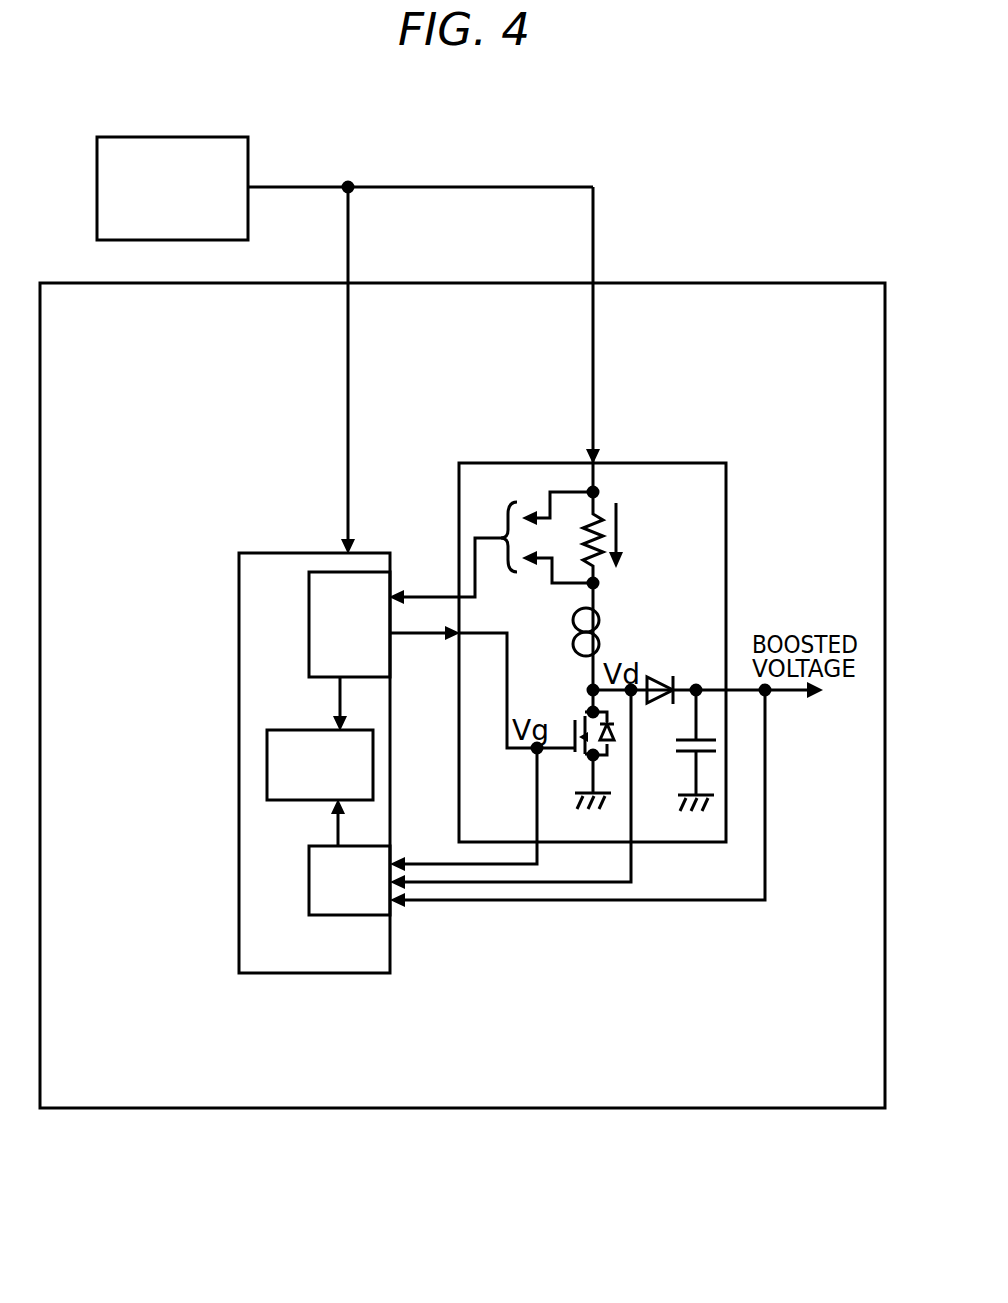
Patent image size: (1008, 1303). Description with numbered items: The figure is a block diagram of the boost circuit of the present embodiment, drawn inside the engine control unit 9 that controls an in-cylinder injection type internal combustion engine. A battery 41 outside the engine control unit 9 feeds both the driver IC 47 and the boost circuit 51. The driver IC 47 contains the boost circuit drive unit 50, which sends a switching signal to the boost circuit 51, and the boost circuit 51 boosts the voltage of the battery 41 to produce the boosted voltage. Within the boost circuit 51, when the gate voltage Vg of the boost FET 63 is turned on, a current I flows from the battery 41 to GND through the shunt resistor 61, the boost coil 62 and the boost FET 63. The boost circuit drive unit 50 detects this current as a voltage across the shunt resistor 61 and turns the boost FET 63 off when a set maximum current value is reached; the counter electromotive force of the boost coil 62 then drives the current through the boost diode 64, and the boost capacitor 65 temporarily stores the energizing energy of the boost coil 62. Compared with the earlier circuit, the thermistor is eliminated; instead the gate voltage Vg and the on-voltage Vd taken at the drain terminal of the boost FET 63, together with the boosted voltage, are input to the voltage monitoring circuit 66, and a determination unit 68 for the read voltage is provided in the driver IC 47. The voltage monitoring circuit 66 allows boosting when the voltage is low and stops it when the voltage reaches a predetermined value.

The engine control unit 9 is at (123, 1100).
The battery 41 is at (175, 147).
The driver IC 47 is at (273, 960).
The boost circuit drive unit 50 is at (320, 653).
The boost circuit 51 is at (686, 497).
The shunt resistor 61 is at (622, 550).
The boost coil 62 is at (612, 627).
The boost FET 63 is at (567, 762).
The boost diode 64 is at (663, 672).
The boost capacitor 65 is at (712, 758).
The voltage monitoring circuit 66 is at (309, 872).
The determination unit 68 is at (267, 800).